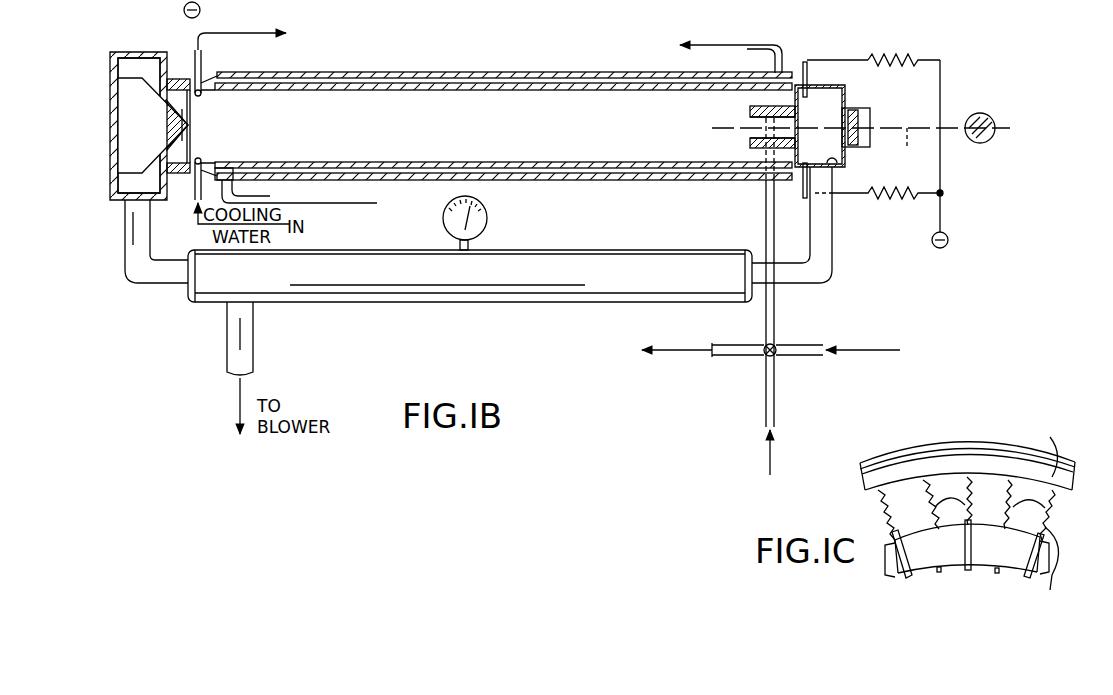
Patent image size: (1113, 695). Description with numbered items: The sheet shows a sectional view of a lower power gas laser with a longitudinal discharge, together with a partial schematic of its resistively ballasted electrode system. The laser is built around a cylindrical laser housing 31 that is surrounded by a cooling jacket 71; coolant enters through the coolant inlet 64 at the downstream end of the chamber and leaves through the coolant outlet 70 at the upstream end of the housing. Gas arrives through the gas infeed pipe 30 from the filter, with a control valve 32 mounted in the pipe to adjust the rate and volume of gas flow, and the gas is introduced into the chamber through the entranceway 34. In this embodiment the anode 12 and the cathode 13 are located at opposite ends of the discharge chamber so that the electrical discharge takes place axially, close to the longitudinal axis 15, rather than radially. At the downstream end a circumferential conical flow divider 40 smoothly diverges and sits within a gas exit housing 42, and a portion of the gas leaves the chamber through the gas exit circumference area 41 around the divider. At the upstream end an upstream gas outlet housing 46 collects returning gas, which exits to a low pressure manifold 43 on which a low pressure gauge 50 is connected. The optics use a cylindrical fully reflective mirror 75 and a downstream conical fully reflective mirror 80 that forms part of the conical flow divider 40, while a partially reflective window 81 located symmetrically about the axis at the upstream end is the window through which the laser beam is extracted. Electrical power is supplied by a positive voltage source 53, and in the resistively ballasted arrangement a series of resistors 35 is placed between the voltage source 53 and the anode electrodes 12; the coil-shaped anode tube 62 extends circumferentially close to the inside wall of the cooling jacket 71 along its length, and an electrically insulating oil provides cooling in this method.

In FIG. 1B, the anode electrode 12 is at (806, 62).
In FIG. 1B, the cathode electrode 13 is at (203, 58).
In FIG. 1B, the axis 15 is at (861, 140).
In FIG. 1B, the gas infeed pipe 30 is at (766, 200).
In FIG. 1B, the laser housing 31 is at (510, 88).
In FIG. 1B, the control valve 32 is at (763, 357).
In FIG. 1B, the entranceway 34 is at (752, 134).
In FIG. 1B, the resistors 35 is at (890, 58).
In FIG. 1C, the resistors 35 is at (880, 511).
In FIG. 1B, the conical flow divider 40 is at (130, 110).
In FIG. 1B, the gas exit circumference area 41 is at (150, 70).
In FIG. 1B, the gas exit housing 42 is at (110, 62).
In FIG. 1B, the low pressure manifold 43 is at (482, 276).
In FIG. 1B, the upstream gas outlet housing 46 is at (840, 165).
In FIG. 1B, the low pressure gauge 50 is at (487, 218).
In FIG. 1B, the positive voltage source 53 is at (983, 253).
In FIG. 1C, the anode tube 62 is at (877, 478).
In FIG. 1B, the coolant inlet 64 is at (240, 192).
In FIG. 1B, the coolant outlet 70 is at (770, 41).
In FIG. 1B, the cooling jacket 71 is at (441, 72).
In FIG. 1C, the cooling jacket 71 is at (905, 457).
In FIG. 1B, the cylindrical reflective mirror 75 is at (182, 82).
In FIG. 1B, the conical reflective mirror 80 is at (168, 128).
In FIG. 1B, the partially reflective window 81 is at (856, 128).